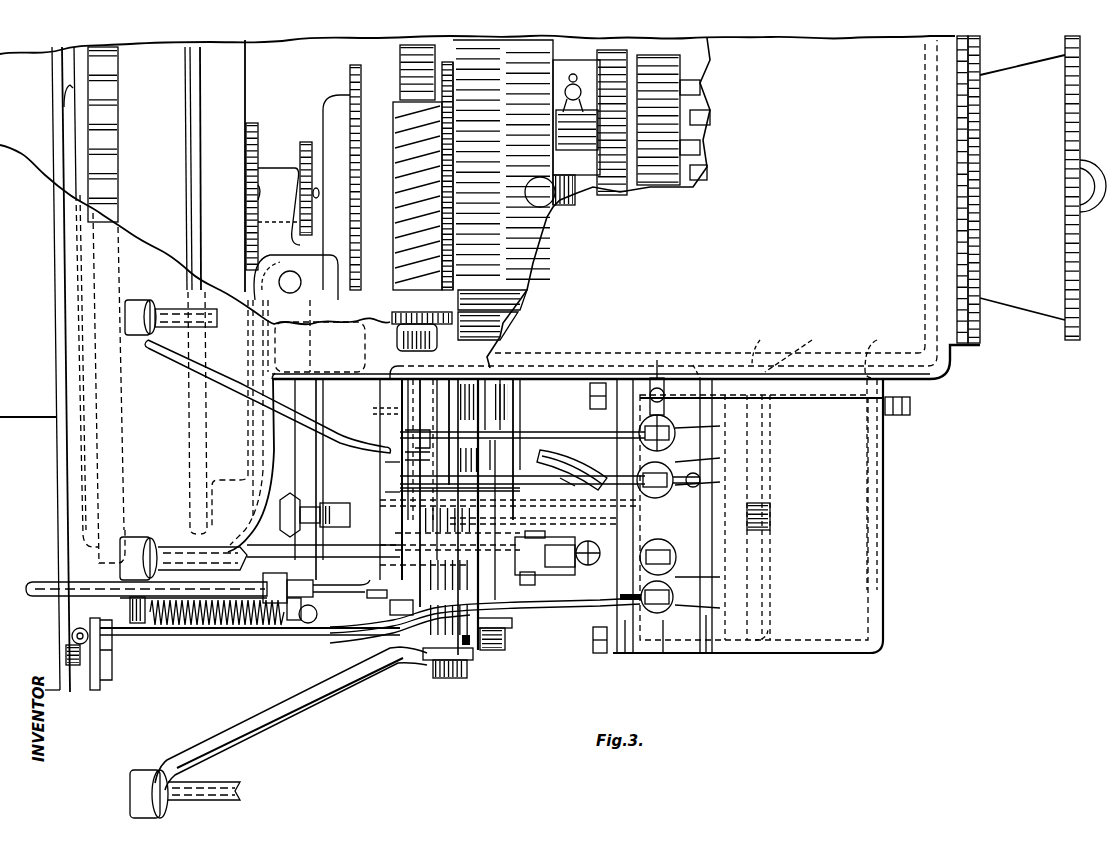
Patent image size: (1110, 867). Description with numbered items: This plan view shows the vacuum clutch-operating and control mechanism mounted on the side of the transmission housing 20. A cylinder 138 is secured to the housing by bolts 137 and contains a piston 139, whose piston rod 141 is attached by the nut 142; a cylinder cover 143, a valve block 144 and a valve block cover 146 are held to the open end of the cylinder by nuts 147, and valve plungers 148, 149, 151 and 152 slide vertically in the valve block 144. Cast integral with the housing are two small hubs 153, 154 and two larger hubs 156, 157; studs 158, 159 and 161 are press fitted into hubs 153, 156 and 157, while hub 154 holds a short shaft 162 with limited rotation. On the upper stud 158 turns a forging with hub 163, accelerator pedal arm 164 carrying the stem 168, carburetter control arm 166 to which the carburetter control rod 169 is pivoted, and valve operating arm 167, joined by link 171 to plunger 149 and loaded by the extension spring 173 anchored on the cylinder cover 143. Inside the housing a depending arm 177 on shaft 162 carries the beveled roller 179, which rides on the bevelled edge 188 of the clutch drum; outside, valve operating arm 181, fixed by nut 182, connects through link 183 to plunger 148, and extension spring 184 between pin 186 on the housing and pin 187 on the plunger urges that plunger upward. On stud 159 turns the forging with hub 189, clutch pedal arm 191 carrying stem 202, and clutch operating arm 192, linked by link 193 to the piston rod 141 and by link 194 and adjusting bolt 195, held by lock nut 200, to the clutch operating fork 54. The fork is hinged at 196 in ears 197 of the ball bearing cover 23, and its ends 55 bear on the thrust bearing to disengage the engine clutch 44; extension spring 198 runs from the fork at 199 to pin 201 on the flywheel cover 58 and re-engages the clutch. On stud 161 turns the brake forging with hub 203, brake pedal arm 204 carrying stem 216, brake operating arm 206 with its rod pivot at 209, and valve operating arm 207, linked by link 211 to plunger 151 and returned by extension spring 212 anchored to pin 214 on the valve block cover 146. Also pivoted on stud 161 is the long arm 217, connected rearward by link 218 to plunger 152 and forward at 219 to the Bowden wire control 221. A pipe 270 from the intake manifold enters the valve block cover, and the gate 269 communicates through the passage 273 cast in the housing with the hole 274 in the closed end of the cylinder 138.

The transmission housing 20 is at (948, 368).
The ball bearing cover 23 is at (347, 78).
The engine clutch 44 is at (257, 92).
The clutch operating fork 54 is at (320, 347).
The fork ends 55 is at (273, 180).
The flywheel cover 58 is at (250, 517).
The bolts 137 is at (905, 412).
The cylinder 138 is at (884, 470).
The piston 139 is at (767, 643).
The piston rod 141 is at (557, 504).
The nut 142 is at (770, 530).
The cylinder cover 143 is at (706, 628).
The valve block 144 is at (663, 657).
The valve block cover 146 is at (617, 652).
The nuts 147 is at (598, 650).
The valve plunger 148 is at (640, 433).
The valve plunger 149 is at (638, 470).
The valve plunger 151 is at (660, 545).
The valve plunger 152 is at (645, 612).
The hub 153 is at (395, 405).
The hub 154 is at (390, 415).
The hub 156 is at (482, 405).
The hub 157 is at (502, 418).
The stud 158 is at (405, 627).
The stud 159 is at (465, 680).
The stud 161 is at (512, 640).
The short shaft 162 is at (445, 407).
The hub 163 is at (400, 466).
The accelerator pedal arm 164 is at (323, 440).
The carburetter control arm 166 is at (368, 594).
The valve operating arm 167 is at (561, 482).
The stem 168 is at (182, 305).
The carburetter control rod 169 is at (50, 585).
The link 171 is at (720, 458).
The extension spring 173 is at (720, 482).
The arm 177 is at (455, 323).
The beveled roller 179 is at (455, 300).
The valve operating arm 181 is at (537, 425).
The nut 182 is at (427, 466).
The link 183 is at (720, 426).
The extension spring 184 is at (643, 393).
The pin 186 is at (663, 378).
The pin 187 is at (700, 370).
The bevelled edge 188 is at (445, 60).
The hub 189 is at (468, 673).
The clutch pedal arm 191 is at (303, 693).
The clutch operating arm 192 is at (400, 492).
The link 193 is at (497, 459).
The link 194 is at (356, 533).
The adjusting bolt 195 is at (293, 503).
The hinge 196 is at (279, 283).
The ears 197 is at (270, 317).
The extension spring 198 is at (220, 627).
The spring connection 199 is at (305, 625).
The lock nut 200 is at (335, 580).
The pin 201 is at (137, 625).
The stem 202 is at (212, 782).
The hub 203 is at (527, 637).
The brake pedal arm 204 is at (260, 557).
The brake operating arm 206 is at (520, 553).
The valve operating arm 207 is at (620, 521).
The pivot connection 209 is at (527, 585).
The link 211 is at (720, 577).
The extension spring 212 is at (575, 522).
The pin 214 is at (591, 567).
The stem 216 is at (212, 553).
The long arm 217 is at (553, 620).
The link 218 is at (720, 608).
The connection 219 is at (112, 612).
The Bowden wire control 221 is at (67, 633).
The gate 269 is at (768, 343).
The pipe 270 is at (560, 470).
The passage 273 is at (804, 351).
The hole 274 is at (887, 354).